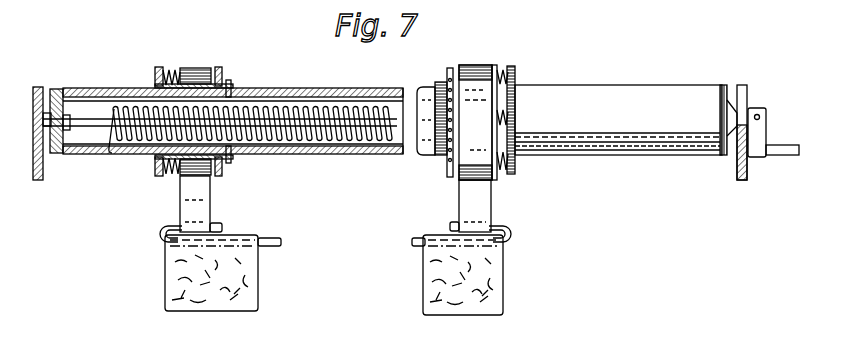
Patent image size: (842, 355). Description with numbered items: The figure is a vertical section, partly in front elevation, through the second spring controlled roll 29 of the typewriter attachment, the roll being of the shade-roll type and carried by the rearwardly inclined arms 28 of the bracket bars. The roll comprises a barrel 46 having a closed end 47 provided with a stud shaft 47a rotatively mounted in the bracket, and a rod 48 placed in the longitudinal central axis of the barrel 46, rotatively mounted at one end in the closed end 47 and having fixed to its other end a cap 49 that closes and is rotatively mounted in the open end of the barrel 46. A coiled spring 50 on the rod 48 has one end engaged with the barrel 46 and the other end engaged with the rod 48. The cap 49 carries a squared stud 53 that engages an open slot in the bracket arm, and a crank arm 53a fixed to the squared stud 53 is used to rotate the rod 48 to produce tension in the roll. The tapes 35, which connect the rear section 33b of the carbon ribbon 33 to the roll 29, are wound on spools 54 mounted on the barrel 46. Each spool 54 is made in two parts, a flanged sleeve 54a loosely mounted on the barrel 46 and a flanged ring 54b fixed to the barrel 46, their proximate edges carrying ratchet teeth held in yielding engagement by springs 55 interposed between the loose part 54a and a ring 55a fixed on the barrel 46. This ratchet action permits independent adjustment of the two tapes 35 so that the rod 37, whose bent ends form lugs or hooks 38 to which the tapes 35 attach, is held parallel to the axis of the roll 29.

The rearwardly inclined arm 28 is at (38, 180).
The spring controlled roll 29 is at (587, 86).
The carbon ribbon 33 is at (161, 277).
The rear ribbon section 33b is at (258, 266).
The tape 35 is at (206, 204).
The rod 37 is at (268, 239).
The lug or hook 38 is at (222, 228).
The barrel 46 is at (305, 92).
The closed end 47 is at (52, 115).
The stud shaft 47a is at (42, 120).
The rod 48 is at (86, 124).
The cap 49 is at (726, 112).
The coiled spring 50 is at (341, 106).
The squared stud 53 is at (745, 122).
The crank arm 53a is at (780, 145).
The spool 54 is at (212, 58).
The flanged sleeve 54a is at (162, 96).
The flanged ring 54b is at (232, 84).
The spring 55 is at (170, 68).
The ring 55a is at (512, 68).